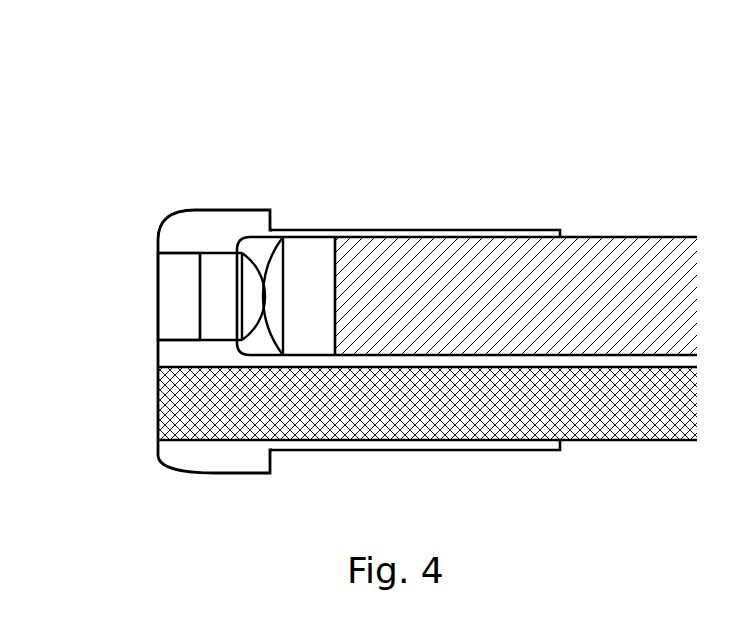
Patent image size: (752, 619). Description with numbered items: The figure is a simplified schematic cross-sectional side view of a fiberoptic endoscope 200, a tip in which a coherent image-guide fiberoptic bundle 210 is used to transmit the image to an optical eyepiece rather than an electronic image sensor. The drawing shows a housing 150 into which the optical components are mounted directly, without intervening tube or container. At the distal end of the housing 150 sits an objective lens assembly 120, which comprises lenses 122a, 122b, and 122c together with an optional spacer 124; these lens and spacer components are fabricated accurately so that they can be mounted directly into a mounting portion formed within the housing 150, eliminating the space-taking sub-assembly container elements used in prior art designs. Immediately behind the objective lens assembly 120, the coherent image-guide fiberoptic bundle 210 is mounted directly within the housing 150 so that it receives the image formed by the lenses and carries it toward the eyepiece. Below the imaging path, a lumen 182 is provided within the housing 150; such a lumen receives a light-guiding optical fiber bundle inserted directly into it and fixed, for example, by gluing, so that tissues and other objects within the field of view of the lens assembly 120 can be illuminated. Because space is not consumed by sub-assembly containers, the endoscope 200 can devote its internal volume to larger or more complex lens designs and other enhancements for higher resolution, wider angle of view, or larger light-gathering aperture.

The fiberoptic endoscope 200 is at (595, 97).
The objective lens assembly 120 is at (335, 220).
The lens 122a is at (180, 298).
The lens 122b is at (215, 268).
The lens 122c is at (312, 255).
The spacer 124 is at (197, 269).
The housing 150 is at (410, 228).
The coherent image-guide fiberoptic bundle 210 is at (514, 270).
The lumen 182 is at (455, 420).